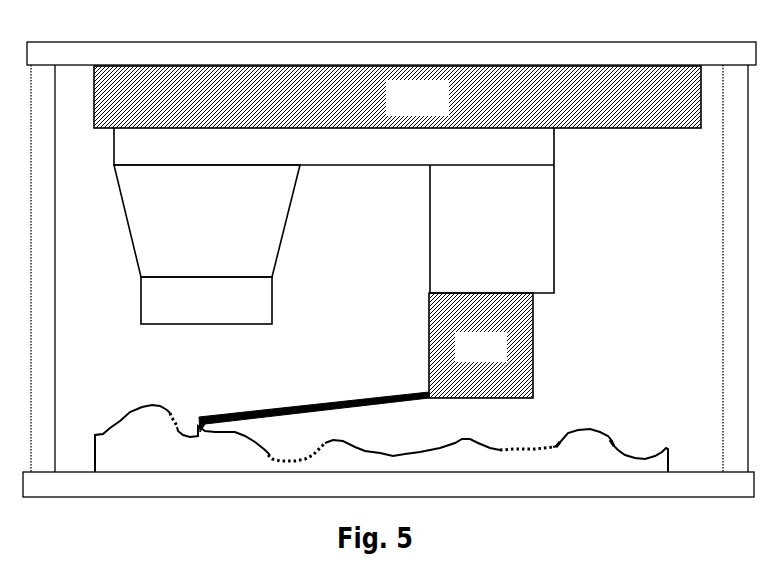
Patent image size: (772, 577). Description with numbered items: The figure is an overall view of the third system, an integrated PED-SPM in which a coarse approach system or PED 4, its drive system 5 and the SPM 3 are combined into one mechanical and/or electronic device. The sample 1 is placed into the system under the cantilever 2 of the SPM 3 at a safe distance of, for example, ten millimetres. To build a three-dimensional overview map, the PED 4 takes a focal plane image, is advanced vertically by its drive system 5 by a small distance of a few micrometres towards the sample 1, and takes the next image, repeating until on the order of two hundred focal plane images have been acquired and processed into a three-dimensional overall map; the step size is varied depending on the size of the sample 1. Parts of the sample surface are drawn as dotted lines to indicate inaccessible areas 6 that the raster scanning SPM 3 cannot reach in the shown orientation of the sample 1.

The sample 1 is at (127, 392).
The cantilever 2 is at (321, 403).
The SPM 3 is at (428, 322).
The PED 4 is at (292, 211).
The drive system 5 is at (422, 65).
The inaccessible areas 6 is at (181, 424).